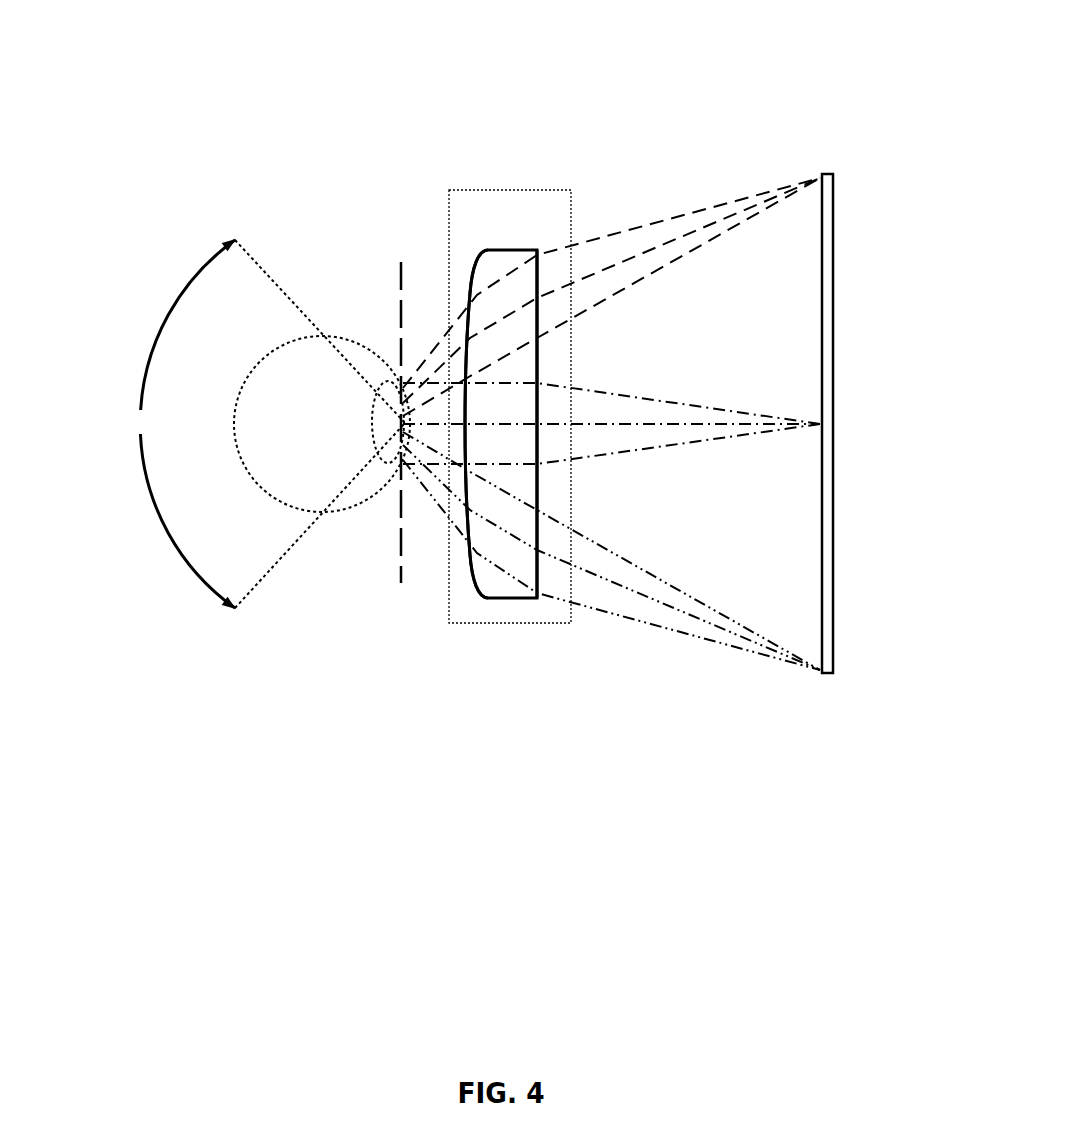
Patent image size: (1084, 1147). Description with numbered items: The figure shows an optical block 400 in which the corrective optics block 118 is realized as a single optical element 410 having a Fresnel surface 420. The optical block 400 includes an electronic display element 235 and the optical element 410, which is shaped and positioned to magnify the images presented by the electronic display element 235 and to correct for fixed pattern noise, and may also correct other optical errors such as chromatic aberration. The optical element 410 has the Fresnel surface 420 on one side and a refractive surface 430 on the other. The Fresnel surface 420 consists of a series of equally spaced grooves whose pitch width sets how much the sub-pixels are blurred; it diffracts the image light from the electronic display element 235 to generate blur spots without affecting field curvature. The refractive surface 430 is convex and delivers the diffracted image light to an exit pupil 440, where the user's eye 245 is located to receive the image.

The optical block 400 is at (157, 85).
The corrective optics block 118 is at (497, 175).
The electronic display element 235 is at (835, 244).
The eye 245 is at (253, 344).
The optical element 410 is at (523, 613).
The Fresnel surface 420 is at (550, 350).
The refractive surface 430 is at (457, 327).
The exit pupil 440 is at (388, 576).